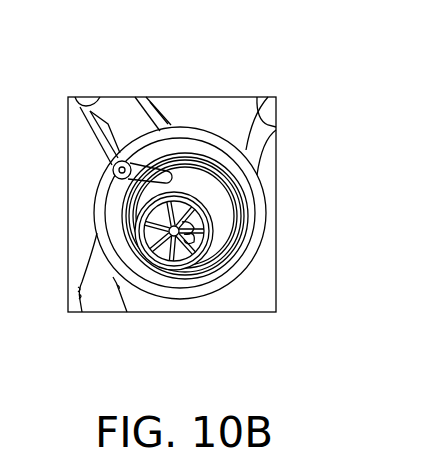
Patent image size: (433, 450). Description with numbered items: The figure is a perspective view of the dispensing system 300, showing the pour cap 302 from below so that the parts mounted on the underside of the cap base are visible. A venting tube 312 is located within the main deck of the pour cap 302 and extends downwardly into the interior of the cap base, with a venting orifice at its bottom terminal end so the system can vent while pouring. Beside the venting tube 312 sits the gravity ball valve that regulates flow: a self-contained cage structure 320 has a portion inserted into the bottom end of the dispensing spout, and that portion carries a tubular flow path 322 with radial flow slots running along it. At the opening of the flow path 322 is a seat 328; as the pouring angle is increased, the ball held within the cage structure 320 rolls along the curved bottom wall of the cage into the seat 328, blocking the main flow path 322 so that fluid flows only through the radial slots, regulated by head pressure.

The dispensing system 300 is at (214, 118).
The pour cap 302 is at (240, 160).
The venting tube 312 is at (128, 162).
The cage structure 320 is at (212, 252).
The flow path 322 is at (210, 216).
The seat 328 is at (207, 232).